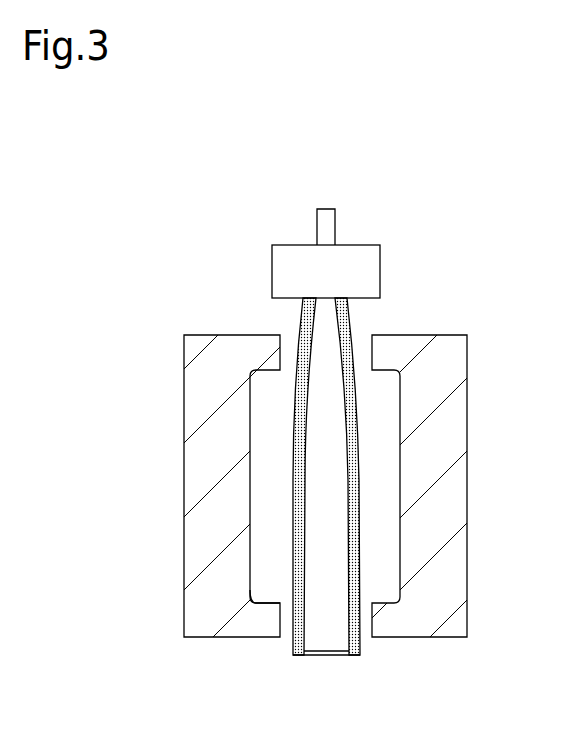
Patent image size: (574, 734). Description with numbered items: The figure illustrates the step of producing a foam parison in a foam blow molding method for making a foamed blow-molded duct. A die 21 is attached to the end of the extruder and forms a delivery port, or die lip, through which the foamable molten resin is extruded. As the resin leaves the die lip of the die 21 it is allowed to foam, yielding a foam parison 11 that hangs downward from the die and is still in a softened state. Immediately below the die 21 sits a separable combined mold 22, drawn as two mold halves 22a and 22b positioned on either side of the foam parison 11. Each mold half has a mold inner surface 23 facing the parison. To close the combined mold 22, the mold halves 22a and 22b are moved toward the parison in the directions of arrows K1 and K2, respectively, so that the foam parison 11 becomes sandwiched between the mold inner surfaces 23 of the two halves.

The die 21 is at (355, 254).
The foam parison 11 is at (348, 320).
The combined mold 22 is at (350, 462).
The mold half 22a is at (248, 348).
The mold half 22b is at (446, 348).
The mold inner surface 23 is at (250, 590).
The arrow K1 is at (238, 657).
The arrow K2 is at (420, 657).